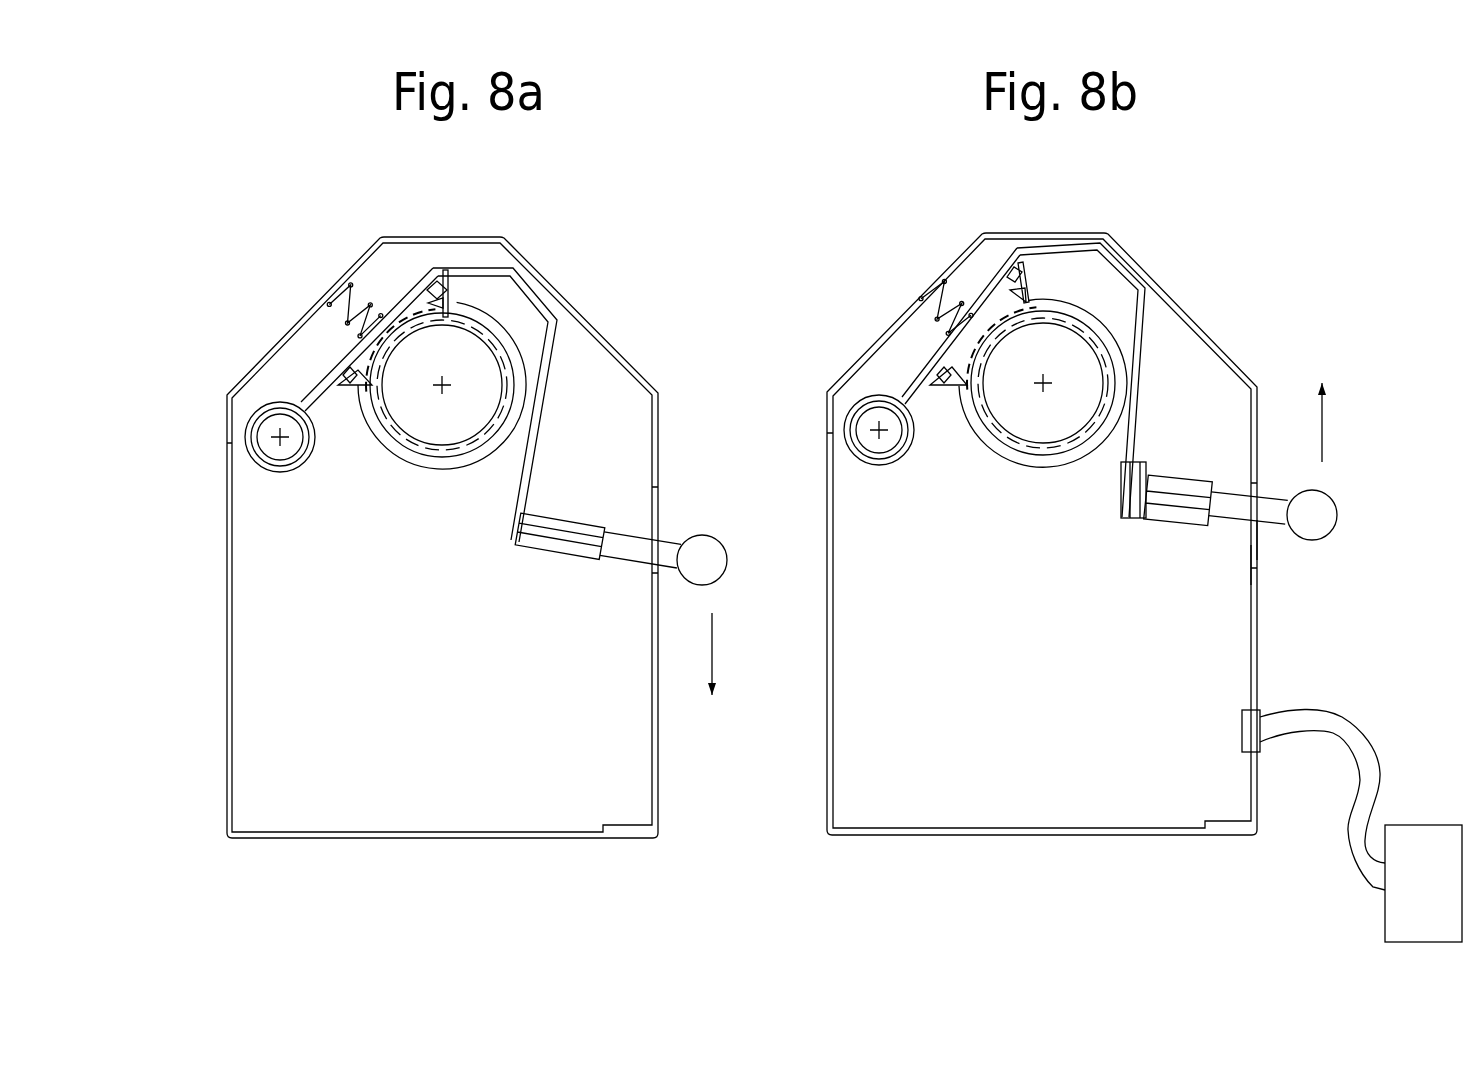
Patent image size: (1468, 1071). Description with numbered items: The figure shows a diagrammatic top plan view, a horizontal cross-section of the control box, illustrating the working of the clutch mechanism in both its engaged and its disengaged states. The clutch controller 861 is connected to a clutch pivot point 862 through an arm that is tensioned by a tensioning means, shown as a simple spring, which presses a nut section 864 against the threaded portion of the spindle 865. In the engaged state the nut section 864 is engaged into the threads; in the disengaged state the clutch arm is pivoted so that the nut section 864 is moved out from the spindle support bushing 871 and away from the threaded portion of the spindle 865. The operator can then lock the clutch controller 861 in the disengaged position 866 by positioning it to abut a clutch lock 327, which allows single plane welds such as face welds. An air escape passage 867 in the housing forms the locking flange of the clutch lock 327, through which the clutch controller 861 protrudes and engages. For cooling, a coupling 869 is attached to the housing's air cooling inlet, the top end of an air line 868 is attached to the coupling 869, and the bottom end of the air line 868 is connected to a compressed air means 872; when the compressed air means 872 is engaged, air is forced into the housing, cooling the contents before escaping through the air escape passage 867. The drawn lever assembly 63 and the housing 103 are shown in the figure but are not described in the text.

In FIG. 8a, the clutch pivot point 862 is at (265, 402).
In FIG. 8a, the nut section 864 is at (428, 300).
In FIG. 8a, the spindle support bushing 871 is at (503, 327).
In FIG. 8a, the spindle 865 is at (507, 357).
In FIG. 8a, the clutch controller 861 is at (713, 523).
In FIG. 8a, the lever 63 is at (507, 513).
In FIG. 8b, the housing 103 is at (822, 743).
In FIG. 8b, the disengaged position 866 is at (1113, 227).
In FIG. 8b, the clutch lock 327 is at (1262, 538).
In FIG. 8b, the air escape passage 867 is at (1262, 562).
In FIG. 8b, the coupling 869 is at (1268, 707).
In FIG. 8b, the air line 868 is at (1368, 740).
In FIG. 8b, the compressed air means 872 is at (1382, 924).